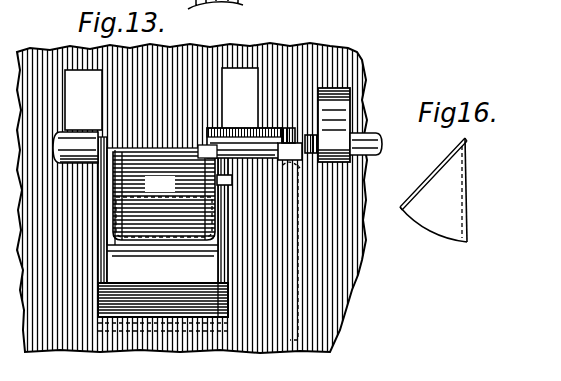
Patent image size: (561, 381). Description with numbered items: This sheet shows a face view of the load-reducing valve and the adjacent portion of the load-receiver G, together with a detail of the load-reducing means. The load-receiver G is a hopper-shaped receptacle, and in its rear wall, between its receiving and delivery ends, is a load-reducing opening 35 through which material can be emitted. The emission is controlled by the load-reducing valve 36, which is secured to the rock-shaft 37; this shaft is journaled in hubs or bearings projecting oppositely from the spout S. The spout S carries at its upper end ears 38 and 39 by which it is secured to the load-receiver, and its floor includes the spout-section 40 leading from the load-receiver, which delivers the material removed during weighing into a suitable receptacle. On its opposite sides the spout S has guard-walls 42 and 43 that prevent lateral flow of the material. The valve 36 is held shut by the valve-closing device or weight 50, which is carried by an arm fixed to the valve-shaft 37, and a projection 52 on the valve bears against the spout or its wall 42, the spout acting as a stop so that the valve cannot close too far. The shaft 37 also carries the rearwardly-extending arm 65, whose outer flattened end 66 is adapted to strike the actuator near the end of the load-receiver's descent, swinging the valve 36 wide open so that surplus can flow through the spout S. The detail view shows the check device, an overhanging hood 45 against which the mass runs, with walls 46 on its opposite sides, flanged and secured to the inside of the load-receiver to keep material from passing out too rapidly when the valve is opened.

In FIG. 13, the load-reducing opening 35 is at (113, 213).
In FIG. 13, the load-reducing valve 36 is at (162, 204).
In FIG. 13, the rock-shaft 37 is at (380, 143).
In FIG. 13, the ear 38 is at (83, 100).
In FIG. 13, the ear 39 is at (240, 99).
In FIG. 13, the spout-section 40 is at (100, 285).
In FIG. 13, the guard-wall 42 is at (228, 266).
In FIG. 13, the guard-wall 43 is at (100, 250).
In FIG. 16, the overhanging hood 45 is at (423, 193).
In FIG. 16, the wall 46 is at (441, 230).
In FIG. 13, the valve-closing device or weight 50 is at (348, 107).
In FIG. 13, the projection 52 is at (232, 180).
In FIG. 13, the rearwardly-extending arm 65 is at (288, 128).
In FIG. 13, the outer flattened end 66 is at (302, 160).
In FIG. 13, the spout S is at (112, 280).
In FIG. 13, the load-receiver G is at (347, 290).